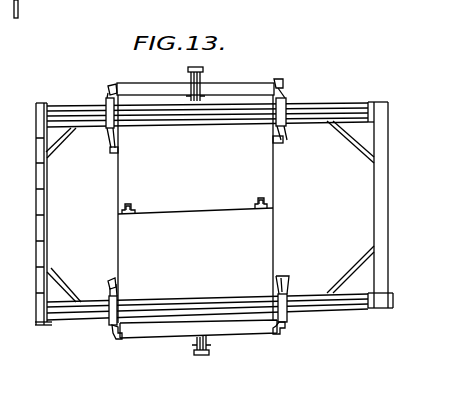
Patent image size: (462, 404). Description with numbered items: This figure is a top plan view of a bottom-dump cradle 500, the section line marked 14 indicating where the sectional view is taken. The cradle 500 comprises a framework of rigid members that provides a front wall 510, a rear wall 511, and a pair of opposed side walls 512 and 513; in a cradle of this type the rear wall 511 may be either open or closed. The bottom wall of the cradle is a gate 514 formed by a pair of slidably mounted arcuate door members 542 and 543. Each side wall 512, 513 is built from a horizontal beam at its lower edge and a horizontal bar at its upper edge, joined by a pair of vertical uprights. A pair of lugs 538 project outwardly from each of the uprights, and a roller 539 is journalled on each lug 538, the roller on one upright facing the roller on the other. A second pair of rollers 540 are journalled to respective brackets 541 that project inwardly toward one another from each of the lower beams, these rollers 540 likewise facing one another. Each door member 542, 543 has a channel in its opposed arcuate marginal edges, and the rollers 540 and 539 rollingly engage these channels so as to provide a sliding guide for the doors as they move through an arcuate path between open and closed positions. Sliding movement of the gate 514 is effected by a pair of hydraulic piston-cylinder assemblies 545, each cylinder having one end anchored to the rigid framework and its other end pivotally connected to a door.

The bottom-dump cradle 500 is at (372, 203).
The front wall 510 is at (386, 200).
The rear wall 511 is at (47, 205).
The side wall 512 is at (314, 116).
The side wall 513 is at (353, 303).
The gate 514 is at (279, 205).
The lugs 538 is at (108, 88).
The roller 539 is at (123, 340).
The rollers 540 is at (114, 152).
The brackets 541 is at (110, 284).
The arcuate door member 542 is at (261, 182).
The arcuate door member 543 is at (254, 245).
The hydraulic piston-cylinder assemblies 545 is at (203, 70).
The section line 14- 14 is at (320, 57).